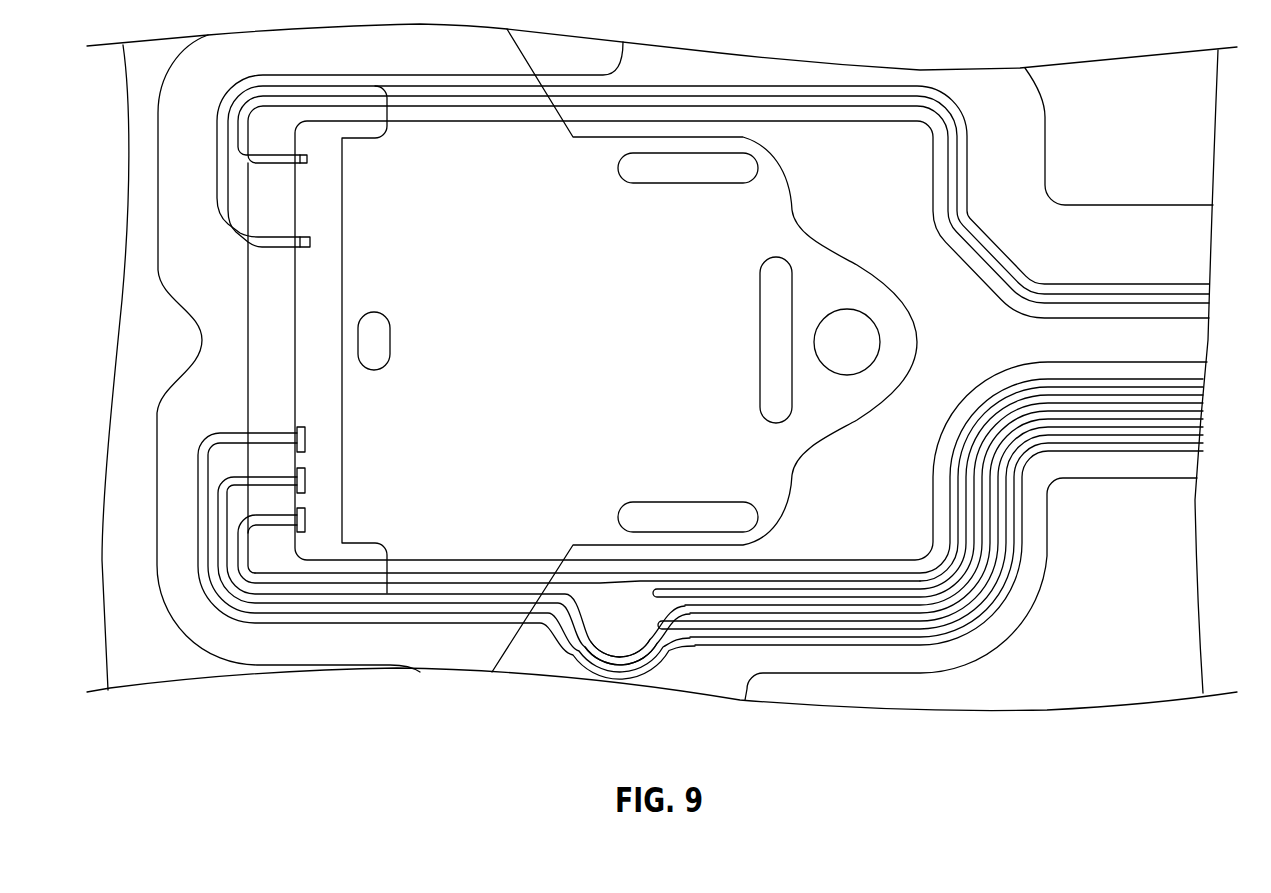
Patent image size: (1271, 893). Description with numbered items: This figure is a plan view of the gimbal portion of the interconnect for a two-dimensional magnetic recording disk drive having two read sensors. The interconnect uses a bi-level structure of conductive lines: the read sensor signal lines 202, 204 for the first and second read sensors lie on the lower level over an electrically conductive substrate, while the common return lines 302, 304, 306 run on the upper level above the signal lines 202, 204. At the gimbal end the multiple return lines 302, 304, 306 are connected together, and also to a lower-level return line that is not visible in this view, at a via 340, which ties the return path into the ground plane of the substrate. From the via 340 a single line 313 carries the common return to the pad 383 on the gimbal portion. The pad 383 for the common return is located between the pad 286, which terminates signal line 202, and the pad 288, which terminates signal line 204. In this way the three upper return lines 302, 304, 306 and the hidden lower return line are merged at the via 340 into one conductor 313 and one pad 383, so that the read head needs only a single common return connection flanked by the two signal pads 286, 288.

The read sensor signal line 202 is at (500, 580).
The read sensor signal line 204 is at (450, 620).
The pad 286 is at (305, 520).
The pad 288 is at (307, 438).
The pad 383 is at (305, 480).
The single line 313 is at (423, 600).
The via 340 is at (607, 640).
The common return line 302 is at (857, 573).
The common return line 304 is at (777, 613).
The common return line 306 is at (862, 643).